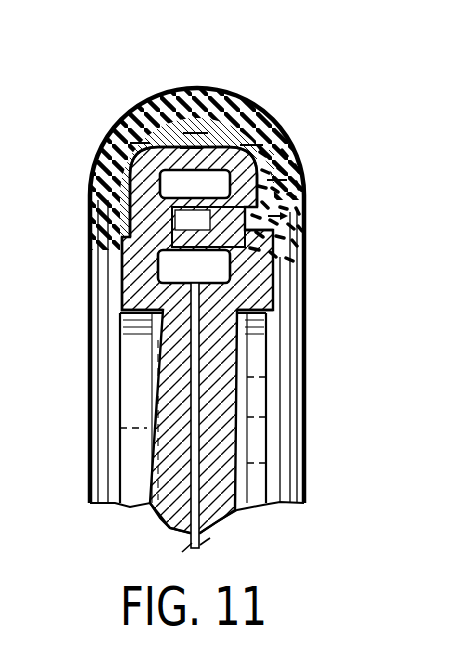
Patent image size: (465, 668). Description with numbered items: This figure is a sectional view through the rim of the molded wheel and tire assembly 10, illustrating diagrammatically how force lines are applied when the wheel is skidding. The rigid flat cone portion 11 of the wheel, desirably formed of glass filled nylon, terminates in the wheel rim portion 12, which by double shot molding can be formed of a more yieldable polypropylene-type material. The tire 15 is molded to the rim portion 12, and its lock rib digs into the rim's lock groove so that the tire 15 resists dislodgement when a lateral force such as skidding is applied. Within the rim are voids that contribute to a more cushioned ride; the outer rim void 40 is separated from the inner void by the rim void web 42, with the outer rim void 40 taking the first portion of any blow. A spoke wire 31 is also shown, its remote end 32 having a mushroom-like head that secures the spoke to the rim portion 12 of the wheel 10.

The molded wheel 10 is at (92, 93).
The flat cone portion 11 is at (150, 413).
The wheel rim portion 12 is at (162, 148).
The tire 15 is at (204, 90).
The spoke wire 31 is at (190, 532).
The remote end of the spoke 32 is at (160, 266).
The outer rim void 40 is at (212, 190).
The rim void web 42 is at (208, 230).